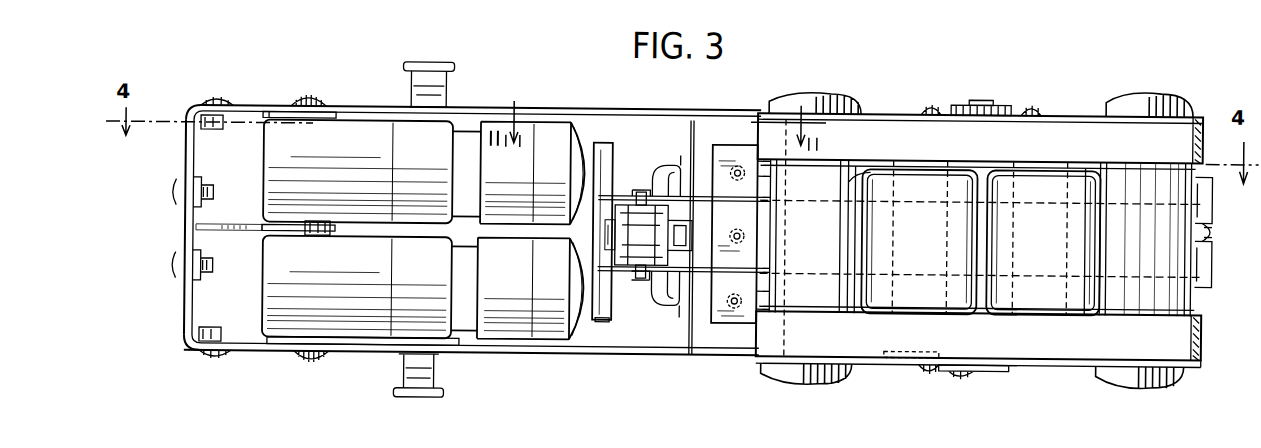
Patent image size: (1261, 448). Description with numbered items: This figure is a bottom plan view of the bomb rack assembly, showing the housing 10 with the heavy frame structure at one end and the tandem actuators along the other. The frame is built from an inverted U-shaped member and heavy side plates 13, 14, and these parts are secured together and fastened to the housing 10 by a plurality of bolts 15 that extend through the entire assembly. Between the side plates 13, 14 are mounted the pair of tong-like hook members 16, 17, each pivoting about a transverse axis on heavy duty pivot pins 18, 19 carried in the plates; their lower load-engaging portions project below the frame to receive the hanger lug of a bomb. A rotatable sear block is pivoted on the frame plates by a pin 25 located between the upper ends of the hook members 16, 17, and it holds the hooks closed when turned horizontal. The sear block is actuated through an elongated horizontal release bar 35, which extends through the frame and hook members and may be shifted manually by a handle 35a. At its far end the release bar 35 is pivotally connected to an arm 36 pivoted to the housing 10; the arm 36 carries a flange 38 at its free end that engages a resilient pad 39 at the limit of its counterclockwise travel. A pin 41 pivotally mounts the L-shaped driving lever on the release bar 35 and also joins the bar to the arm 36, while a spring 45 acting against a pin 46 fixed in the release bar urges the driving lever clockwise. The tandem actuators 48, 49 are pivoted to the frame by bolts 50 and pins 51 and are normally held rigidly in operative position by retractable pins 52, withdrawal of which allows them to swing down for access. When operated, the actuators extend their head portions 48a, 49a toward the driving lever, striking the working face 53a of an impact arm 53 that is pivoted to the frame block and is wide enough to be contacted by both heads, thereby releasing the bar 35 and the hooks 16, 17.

The housing 10 is at (663, 110).
The side plate 13 is at (1085, 122).
The side plate 14 is at (1085, 342).
The bolt 15 is at (845, 100).
The hook member 16 is at (935, 245).
The hook member 17 is at (1045, 244).
The pivot pin 18 is at (887, 318).
The pivot pin 19 is at (1002, 122).
The pin 25 is at (962, 377).
The release bar 35 is at (1208, 220).
The handle 35a is at (1208, 246).
The arm 36 is at (630, 190).
The flange 38 is at (678, 160).
The resilient pad 39 is at (733, 153).
The pin 41 is at (641, 192).
The spring 45 is at (656, 272).
The pin 46 is at (676, 248).
The actuator 48 is at (362, 140).
The head portion 48a is at (578, 342).
The actuator 49 is at (350, 338).
The head portion 49a is at (590, 129).
The bolt 50 is at (306, 104).
The pin 51 is at (316, 243).
The retractable pin 52 is at (447, 64).
The impact arm 53 is at (604, 140).
The working face 53a is at (602, 322).